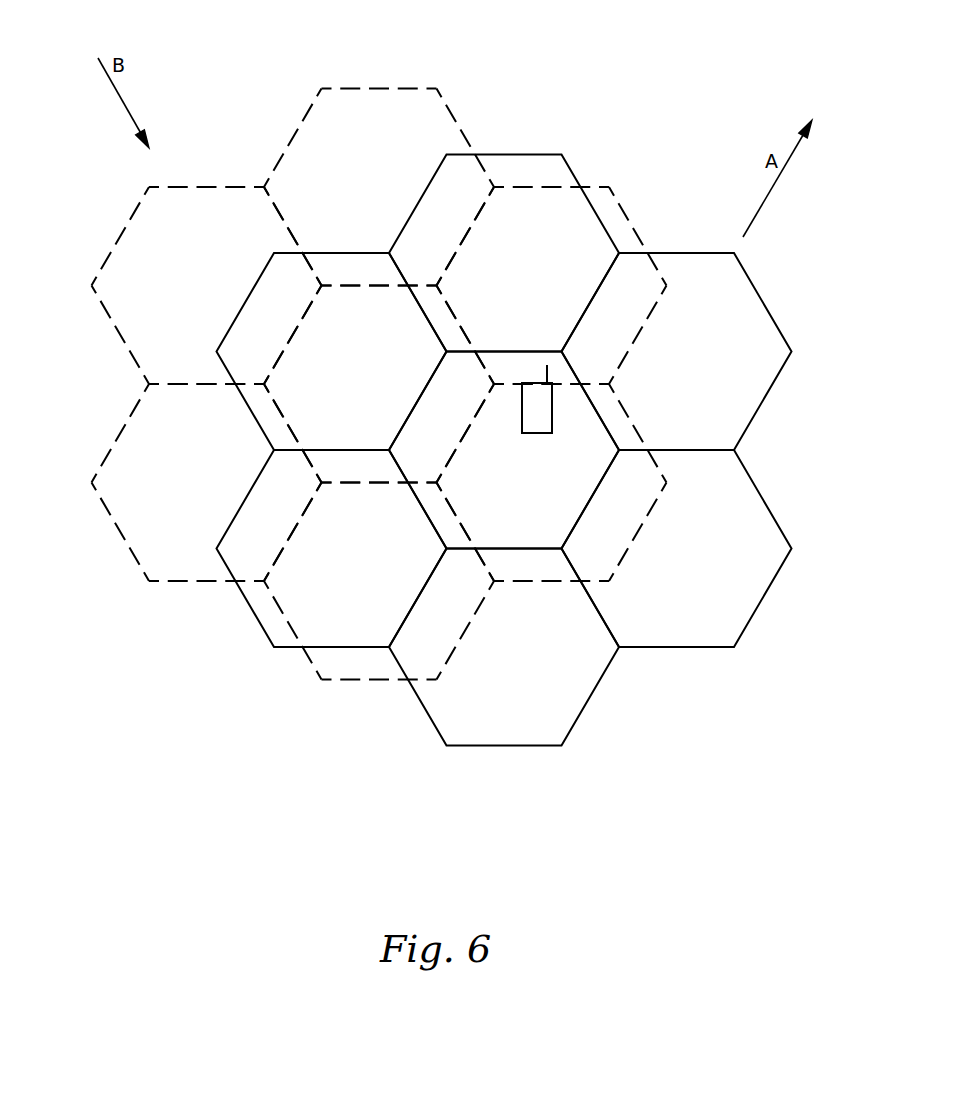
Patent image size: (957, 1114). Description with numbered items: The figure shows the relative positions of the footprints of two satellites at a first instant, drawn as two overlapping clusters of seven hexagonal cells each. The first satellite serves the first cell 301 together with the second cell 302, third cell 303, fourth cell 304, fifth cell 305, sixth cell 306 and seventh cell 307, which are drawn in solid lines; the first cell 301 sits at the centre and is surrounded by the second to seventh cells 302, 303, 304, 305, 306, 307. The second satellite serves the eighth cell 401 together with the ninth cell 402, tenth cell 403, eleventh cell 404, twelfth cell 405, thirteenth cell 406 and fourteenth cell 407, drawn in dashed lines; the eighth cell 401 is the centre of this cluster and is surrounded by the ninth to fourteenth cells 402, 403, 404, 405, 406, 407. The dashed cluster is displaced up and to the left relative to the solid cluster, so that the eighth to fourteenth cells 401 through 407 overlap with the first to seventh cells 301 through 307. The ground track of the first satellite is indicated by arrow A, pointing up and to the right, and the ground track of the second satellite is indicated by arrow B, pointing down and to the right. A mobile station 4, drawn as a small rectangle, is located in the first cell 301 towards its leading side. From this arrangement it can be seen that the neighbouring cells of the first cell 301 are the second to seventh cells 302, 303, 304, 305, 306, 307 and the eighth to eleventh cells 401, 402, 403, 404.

The mobile station 4 is at (533, 435).
The first cell 301 is at (522, 549).
The second cell 302 is at (780, 328).
The third cell 303 is at (765, 502).
The fourth cell 304 is at (594, 692).
The fifth cell 305 is at (261, 628).
The sixth cell 306 is at (242, 301).
The seventh cell 307 is at (517, 153).
The eighth cell 401 is at (458, 317).
The ninth cell 402 is at (628, 218).
The tenth cell 403 is at (628, 412).
The eleventh cell 404 is at (340, 681).
The twelfth cell 405 is at (131, 571).
The thirteenth cell 406 is at (113, 322).
The fourteenth cell 407 is at (362, 86).